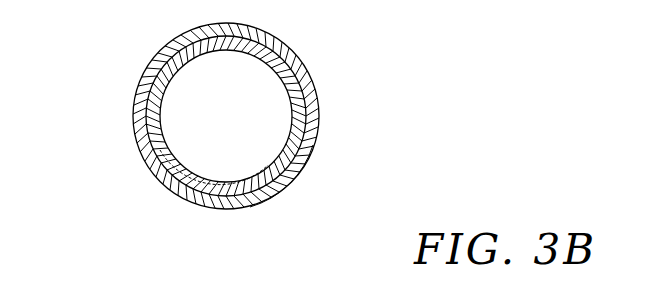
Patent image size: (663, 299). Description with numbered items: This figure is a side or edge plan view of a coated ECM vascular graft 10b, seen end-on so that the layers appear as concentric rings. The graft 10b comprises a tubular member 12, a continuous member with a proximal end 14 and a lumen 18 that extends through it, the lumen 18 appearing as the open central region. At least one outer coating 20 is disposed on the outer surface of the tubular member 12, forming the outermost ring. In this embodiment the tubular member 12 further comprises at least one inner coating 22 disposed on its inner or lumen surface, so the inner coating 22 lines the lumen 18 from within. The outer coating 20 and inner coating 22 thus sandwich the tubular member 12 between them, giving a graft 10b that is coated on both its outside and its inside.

The graft 10b is at (194, 117).
The tubular member 12 is at (313, 146).
The proximal end 14 is at (198, 199).
The lumen 18 is at (150, 158).
The outer coating 20 is at (307, 70).
The inner coating 22 is at (256, 48).